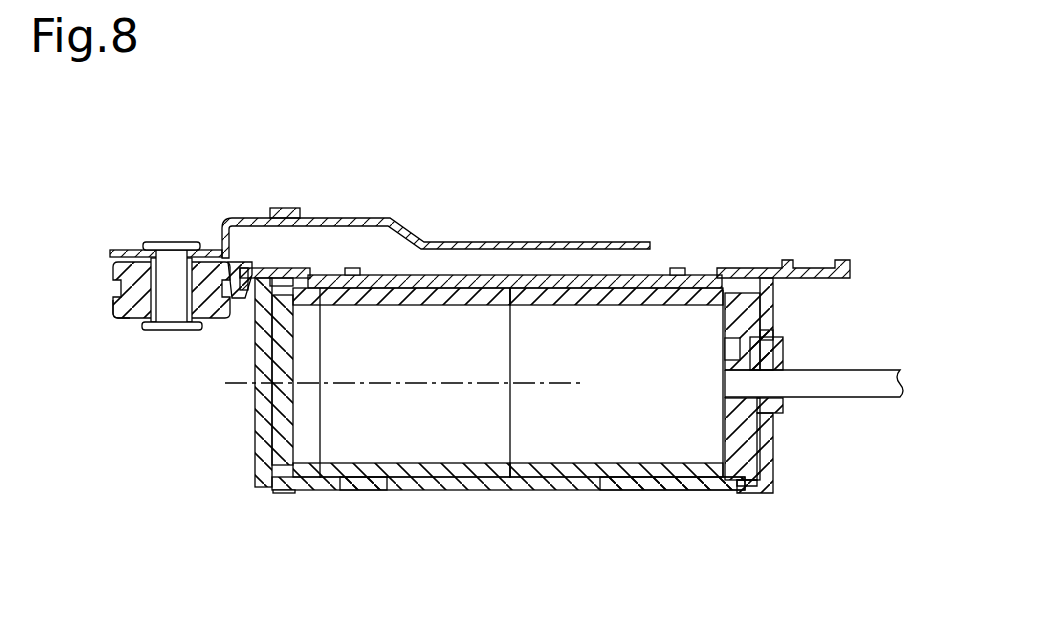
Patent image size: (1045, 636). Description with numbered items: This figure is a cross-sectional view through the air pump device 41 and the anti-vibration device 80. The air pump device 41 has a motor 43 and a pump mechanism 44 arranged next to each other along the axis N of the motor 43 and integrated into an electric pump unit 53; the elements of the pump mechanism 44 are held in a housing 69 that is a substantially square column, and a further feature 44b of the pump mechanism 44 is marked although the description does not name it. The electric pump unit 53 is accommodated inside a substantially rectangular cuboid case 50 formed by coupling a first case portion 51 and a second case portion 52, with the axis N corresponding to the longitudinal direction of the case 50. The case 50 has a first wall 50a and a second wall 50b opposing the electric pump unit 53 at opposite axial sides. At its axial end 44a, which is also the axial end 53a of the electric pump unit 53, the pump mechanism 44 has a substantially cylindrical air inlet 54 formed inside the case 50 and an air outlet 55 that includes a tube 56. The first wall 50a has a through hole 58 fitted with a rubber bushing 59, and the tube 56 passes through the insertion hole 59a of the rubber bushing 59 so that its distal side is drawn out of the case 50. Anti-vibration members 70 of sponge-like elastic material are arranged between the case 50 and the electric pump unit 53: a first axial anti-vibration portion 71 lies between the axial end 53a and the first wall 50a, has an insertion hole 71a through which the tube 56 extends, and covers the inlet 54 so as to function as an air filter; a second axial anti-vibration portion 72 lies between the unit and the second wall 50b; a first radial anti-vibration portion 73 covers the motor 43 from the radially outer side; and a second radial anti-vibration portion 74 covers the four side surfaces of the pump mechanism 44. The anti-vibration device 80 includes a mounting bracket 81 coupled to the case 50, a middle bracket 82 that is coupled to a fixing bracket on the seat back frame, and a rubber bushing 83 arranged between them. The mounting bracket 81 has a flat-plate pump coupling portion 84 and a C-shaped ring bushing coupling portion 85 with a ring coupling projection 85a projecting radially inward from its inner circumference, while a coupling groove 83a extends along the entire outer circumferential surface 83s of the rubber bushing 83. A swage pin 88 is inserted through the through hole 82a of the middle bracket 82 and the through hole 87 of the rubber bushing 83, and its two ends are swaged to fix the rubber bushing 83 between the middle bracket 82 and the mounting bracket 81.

The air pump device 41 is at (150, 554).
The motor 43 is at (422, 492).
The pump mechanism 44 is at (616, 420).
The axial end 44a is at (811, 511).
The boundary of outer tube 44b is at (508, 327).
The case 50 is at (491, 387).
The first wall 50a is at (770, 445).
The second wall 50b is at (265, 410).
The first case portion 51 is at (258, 487).
The second case portion 52 is at (655, 275).
The electric pump unit 53 is at (617, 567).
The axial end 53a is at (745, 486).
The air inlet 54 is at (760, 323).
The air outlet 55 is at (868, 370).
The tube 56 is at (834, 358).
The through hole 58 is at (783, 350).
The rubber bushing 59 is at (765, 352).
The insertion hole 59a is at (780, 398).
The housing 69 is at (548, 492).
The anti-vibration members 70 is at (491, 387).
The first axial anti-vibration portion 71 is at (742, 275).
The insertion hole 71a is at (725, 392).
The second axial anti-vibration portion 72 is at (257, 426).
The first radial anti-vibration portion 73 is at (380, 482).
The second radial anti-vibration portion 74 is at (660, 483).
The anti-vibration device 80 is at (101, 131).
The mounting bracket 81 is at (183, 140).
The middle bracket 82 is at (560, 242).
The through hole 82a is at (160, 262).
The rubber bushing 83 is at (151, 241).
The coupling groove 83a is at (115, 312).
The outer circumferential surface 83s is at (113, 282).
The pump coupling portion 84 is at (292, 272).
The bushing coupling portion 85 is at (246, 201).
The ring coupling projection 85a is at (285, 213).
The through hole 87 is at (180, 305).
The swage pin 88 is at (158, 330).
The axis N is at (527, 383).